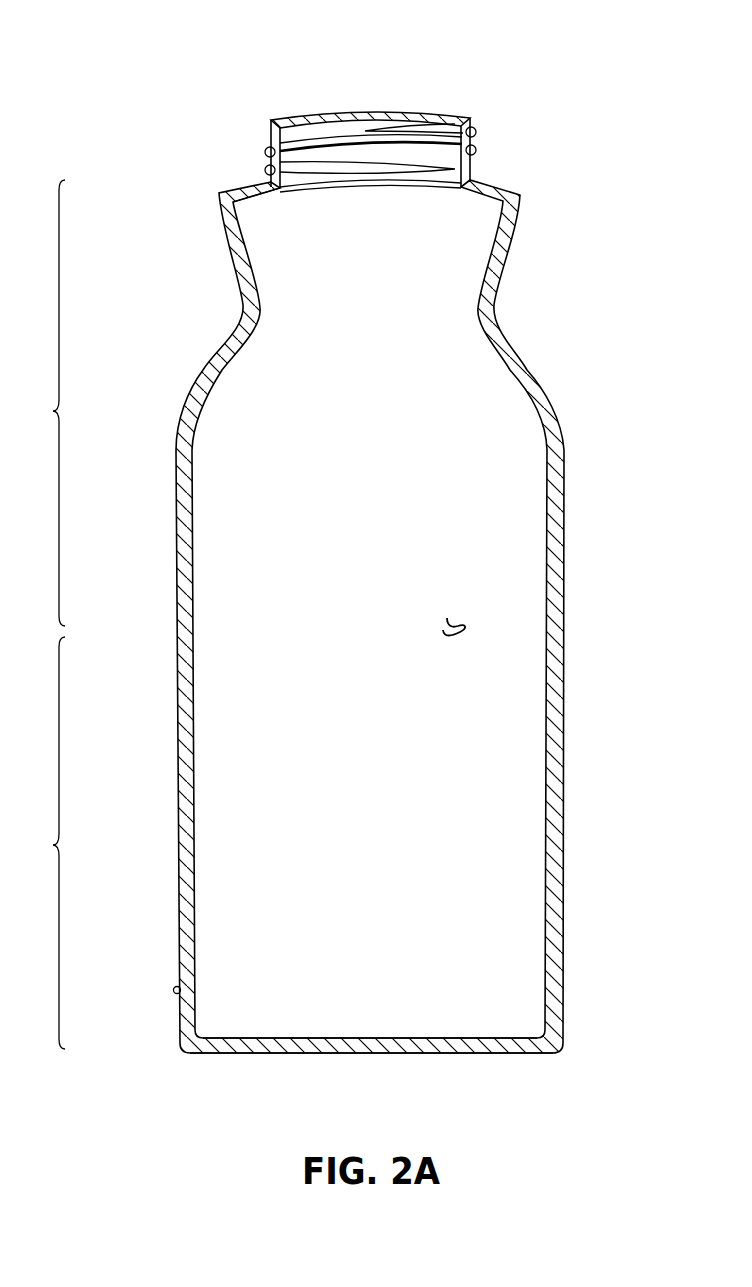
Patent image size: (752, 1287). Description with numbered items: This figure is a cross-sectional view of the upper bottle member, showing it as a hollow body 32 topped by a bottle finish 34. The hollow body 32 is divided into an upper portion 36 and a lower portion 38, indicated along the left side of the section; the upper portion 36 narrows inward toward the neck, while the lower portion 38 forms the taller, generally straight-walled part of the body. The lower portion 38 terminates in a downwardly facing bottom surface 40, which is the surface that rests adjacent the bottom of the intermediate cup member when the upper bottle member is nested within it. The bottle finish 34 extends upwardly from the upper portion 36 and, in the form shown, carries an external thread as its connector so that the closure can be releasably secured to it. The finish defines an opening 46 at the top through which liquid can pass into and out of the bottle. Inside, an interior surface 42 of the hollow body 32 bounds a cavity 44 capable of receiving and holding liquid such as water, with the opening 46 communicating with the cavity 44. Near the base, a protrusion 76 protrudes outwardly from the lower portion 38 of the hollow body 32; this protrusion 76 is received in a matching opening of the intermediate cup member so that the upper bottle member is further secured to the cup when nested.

The hollow body 32 is at (564, 726).
The bottle finish 34 is at (470, 120).
The upper portion 36 is at (38, 403).
The lower portion 38 is at (39, 843).
The downwardly facing bottom surface 40 is at (480, 1053).
The interior surface 42 is at (236, 223).
The cavity 44 is at (447, 620).
The opening 46 is at (307, 114).
The protrusion 76 is at (174, 989).